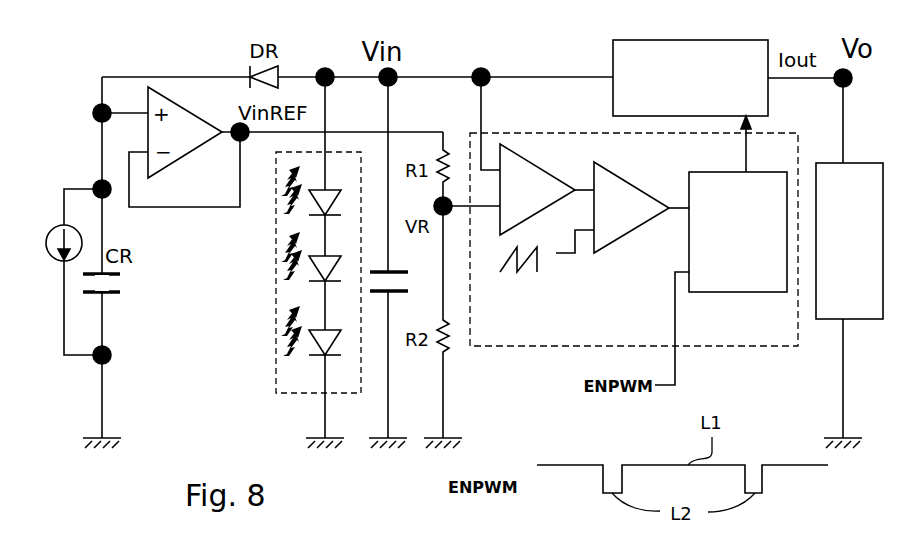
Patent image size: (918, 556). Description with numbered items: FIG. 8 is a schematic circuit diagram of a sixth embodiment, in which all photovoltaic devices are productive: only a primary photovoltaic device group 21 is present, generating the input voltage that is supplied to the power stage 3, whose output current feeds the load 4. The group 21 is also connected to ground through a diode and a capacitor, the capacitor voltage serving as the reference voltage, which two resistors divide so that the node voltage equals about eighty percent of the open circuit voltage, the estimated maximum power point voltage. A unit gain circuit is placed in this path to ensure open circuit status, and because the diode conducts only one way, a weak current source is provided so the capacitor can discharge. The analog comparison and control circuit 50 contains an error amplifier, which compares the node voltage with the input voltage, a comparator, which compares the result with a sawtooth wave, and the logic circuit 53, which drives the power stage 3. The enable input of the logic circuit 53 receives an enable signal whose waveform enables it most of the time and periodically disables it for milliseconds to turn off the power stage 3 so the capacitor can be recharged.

The power stage 3 is at (725, 40).
The load 4 is at (857, 319).
The primary photovoltaic device group 21 is at (276, 345).
The analog comparison and control circuit 50 is at (718, 346).
The logic circuit 53 is at (708, 292).